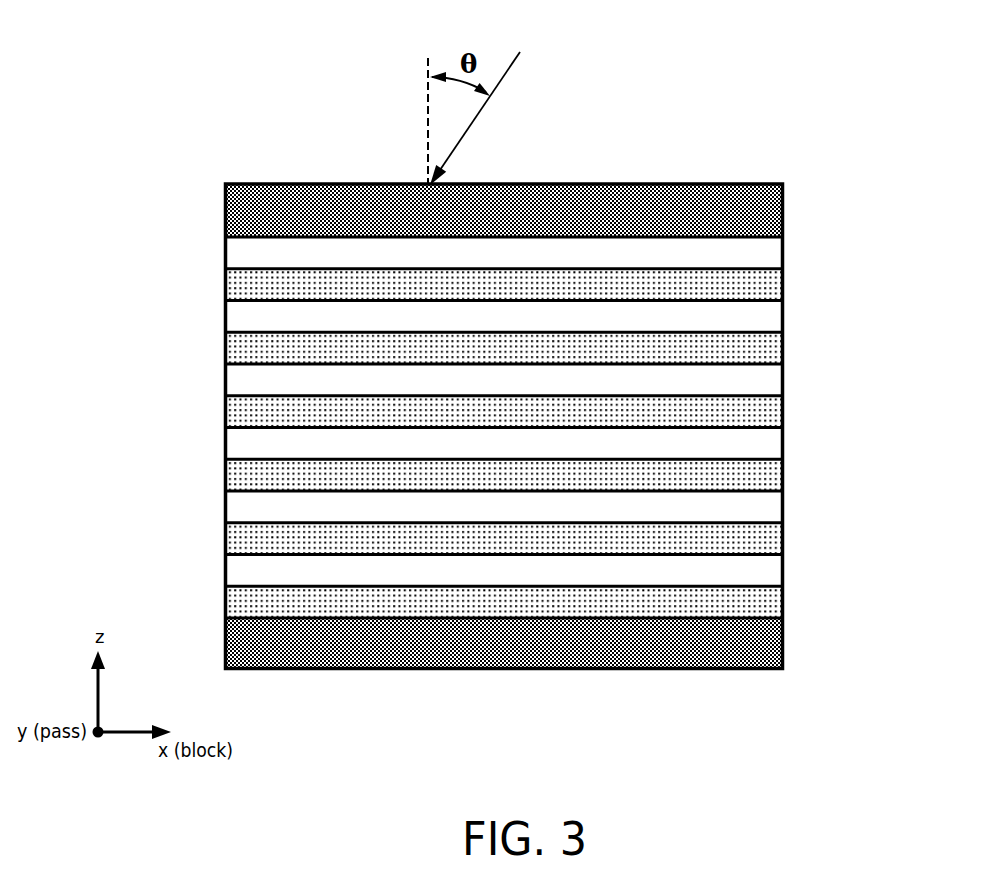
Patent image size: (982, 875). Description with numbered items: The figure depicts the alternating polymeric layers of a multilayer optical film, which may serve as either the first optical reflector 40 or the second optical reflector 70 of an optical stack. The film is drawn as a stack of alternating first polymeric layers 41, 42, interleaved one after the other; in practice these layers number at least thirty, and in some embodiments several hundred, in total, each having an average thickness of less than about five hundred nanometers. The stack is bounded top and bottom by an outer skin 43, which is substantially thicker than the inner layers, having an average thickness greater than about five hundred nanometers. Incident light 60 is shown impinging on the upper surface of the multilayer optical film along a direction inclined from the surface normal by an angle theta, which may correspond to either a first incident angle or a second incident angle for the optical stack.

The first optical reflector 40 is at (187, 114).
The second optical reflector 70 is at (491, 426).
The first polymeric layer 41 is at (238, 252).
The first polymeric layer 42 is at (240, 289).
The outer skin 43 is at (783, 212).
The incident light 60 is at (517, 63).